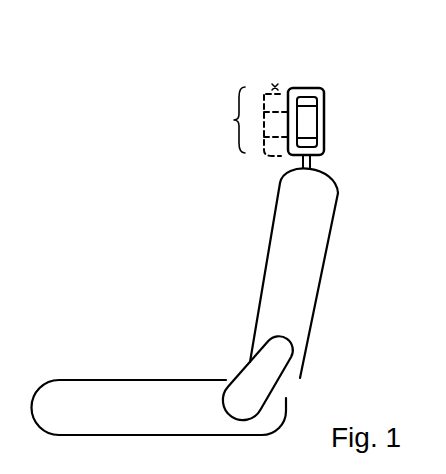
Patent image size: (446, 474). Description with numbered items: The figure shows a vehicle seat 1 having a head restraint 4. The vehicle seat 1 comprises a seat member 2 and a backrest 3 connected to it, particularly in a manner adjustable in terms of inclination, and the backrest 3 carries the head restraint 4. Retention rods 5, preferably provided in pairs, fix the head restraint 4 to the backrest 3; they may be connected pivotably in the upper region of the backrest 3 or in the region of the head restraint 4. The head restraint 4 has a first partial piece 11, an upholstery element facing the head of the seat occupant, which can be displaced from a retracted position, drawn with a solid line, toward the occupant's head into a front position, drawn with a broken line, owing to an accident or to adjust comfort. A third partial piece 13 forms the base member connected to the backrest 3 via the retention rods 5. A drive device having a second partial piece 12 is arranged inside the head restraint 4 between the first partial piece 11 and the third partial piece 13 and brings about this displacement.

The vehicle seat 1 is at (190, 218).
The seat member 2 is at (113, 399).
The backrest 3 is at (308, 240).
The head restraint 4 is at (229, 120).
The retention rods 5 is at (312, 163).
The first partial piece 11 is at (297, 88).
The second partial piece 12 is at (308, 116).
The third partial piece 13 is at (323, 130).